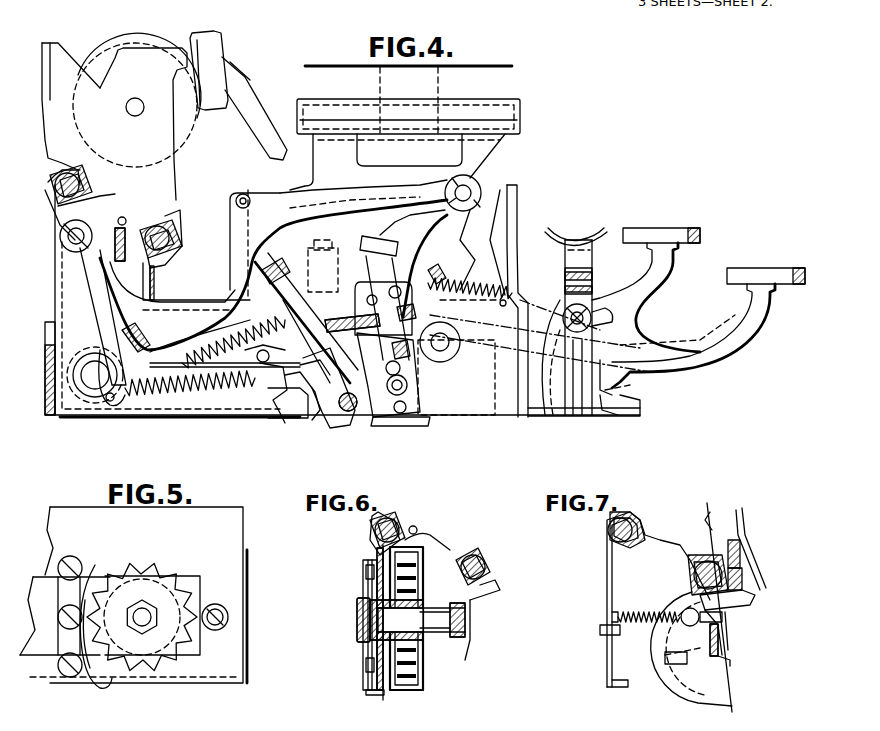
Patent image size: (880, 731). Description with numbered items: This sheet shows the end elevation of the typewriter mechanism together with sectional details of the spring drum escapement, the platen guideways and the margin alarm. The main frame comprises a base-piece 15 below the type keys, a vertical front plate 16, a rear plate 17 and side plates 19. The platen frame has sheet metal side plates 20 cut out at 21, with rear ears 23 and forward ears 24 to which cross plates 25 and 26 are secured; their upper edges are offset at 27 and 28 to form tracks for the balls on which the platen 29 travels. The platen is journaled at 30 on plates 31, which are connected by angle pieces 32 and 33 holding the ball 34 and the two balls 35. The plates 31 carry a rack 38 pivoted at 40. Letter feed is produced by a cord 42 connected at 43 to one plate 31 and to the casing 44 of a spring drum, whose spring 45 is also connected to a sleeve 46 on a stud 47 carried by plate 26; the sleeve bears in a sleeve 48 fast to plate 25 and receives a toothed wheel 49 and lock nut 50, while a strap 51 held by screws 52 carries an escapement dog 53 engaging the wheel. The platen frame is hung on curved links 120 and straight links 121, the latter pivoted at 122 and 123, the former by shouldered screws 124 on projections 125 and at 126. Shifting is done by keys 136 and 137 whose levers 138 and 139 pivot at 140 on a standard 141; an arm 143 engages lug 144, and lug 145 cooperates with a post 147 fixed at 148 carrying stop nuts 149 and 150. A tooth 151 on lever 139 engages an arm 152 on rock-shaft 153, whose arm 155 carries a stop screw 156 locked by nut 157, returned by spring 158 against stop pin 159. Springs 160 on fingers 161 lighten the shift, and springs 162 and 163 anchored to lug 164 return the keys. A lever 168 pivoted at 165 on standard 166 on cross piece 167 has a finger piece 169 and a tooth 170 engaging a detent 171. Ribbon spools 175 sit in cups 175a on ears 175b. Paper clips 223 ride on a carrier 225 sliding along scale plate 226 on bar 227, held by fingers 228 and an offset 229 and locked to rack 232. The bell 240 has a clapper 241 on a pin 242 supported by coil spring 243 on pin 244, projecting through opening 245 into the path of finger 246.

In FIG. 4, the base-piece 15 is at (182, 418).
In FIG. 4, the front plate 16 is at (518, 198).
In FIG. 4, the rear plate 17 is at (45, 368).
In FIG. 4, the side plates 19 is at (285, 410).
In FIG. 4, the side plates 20 is at (440, 237).
In FIG. 4, the cut-out 21 is at (408, 220).
In FIG. 5, the ears 23 is at (247, 592).
In FIG. 4, the ears 24 is at (156, 275).
In FIG. 5, the cross plate 25 is at (243, 530).
In FIG. 6, the cross plate 25 is at (380, 552).
In FIG. 7, the cross plate 25 is at (607, 578).
In FIG. 4, the cross plate 26 is at (168, 296).
In FIG. 6, the cross plate 26 is at (468, 640).
In FIG. 7, the cross plate 26 is at (730, 662).
In FIG. 4, the offset 27 is at (48, 195).
In FIG. 6, the offset 27 is at (370, 536).
In FIG. 4, the offset 28 is at (175, 258).
In FIG. 6, the offset 28 is at (492, 588).
In FIG. 4, the platen 29 is at (140, 44).
In FIG. 4, the platen journal 30 is at (137, 102).
In FIG. 4, the plates 31 is at (176, 175).
In FIG. 7, the plates 31 is at (712, 505).
In FIG. 4, the angle piece 32 is at (88, 196).
In FIG. 4, the angle piece 33 is at (152, 225).
In FIG. 6, the angle piece 33 is at (469, 559).
In FIG. 4, the ball 34 is at (58, 182).
In FIG. 6, the ball 34 is at (392, 520).
In FIG. 7, the ball 34 is at (622, 522).
In FIG. 4, the balls 35 is at (180, 220).
In FIG. 6, the balls 35 is at (482, 564).
In FIG. 4, the rack 38 is at (111, 244).
In FIG. 4, the pivot 40 is at (122, 217).
In FIG. 6, the cord 42 is at (422, 534).
In FIG. 6, the cord connection 43 is at (415, 526).
In FIG. 6, the casing 44 is at (395, 692).
In FIG. 6, the spring 45 is at (420, 668).
In FIG. 6, the sleeve 46 is at (428, 600).
In FIG. 6, the stud 47 is at (445, 612).
In FIG. 6, the sleeve 48 is at (363, 585).
In FIG. 5, the toothed wheel 49 is at (165, 580).
In FIG. 6, the toothed wheel 49 is at (363, 642).
In FIG. 6, the lock nut 50 is at (357, 620).
In FIG. 5, the strap 51 is at (58, 590).
In FIG. 6, the strap 51 is at (366, 693).
In FIG. 5, the screws 52 is at (78, 560).
In FIG. 6, the screws 52 is at (366, 570).
In FIG. 5, the escapement dog 53 is at (96, 680).
In FIG. 4, the arms or links 120 is at (296, 192).
In FIG. 4, the arms or links 121 is at (258, 375).
In FIG. 4, the pivot 122 is at (92, 390).
In FIG. 4, the pivot 123 is at (385, 355).
In FIG. 4, the shouldered screws 124 is at (66, 248).
In FIG. 4, the upward projections 125 is at (57, 305).
In FIG. 4, the pivot 126 is at (470, 188).
In FIG. 4, the key 136 is at (668, 232).
In FIG. 4, the key 137 is at (770, 275).
In FIG. 4, the key lever 138 is at (665, 293).
In FIG. 4, the key lever 139 is at (705, 368).
In FIG. 4, the pivot 140 is at (448, 347).
In FIG. 4, the standard 141 is at (474, 386).
In FIG. 4, the arm 143 is at (305, 415).
In FIG. 4, the lug or offset 144 is at (352, 333).
In FIG. 4, the lug or offset 145 is at (440, 332).
In FIG. 4, the post 147 is at (386, 258).
In FIG. 4, the post attachment 148 is at (400, 424).
In FIG. 4, the stop nut 149 is at (372, 248).
In FIG. 4, the stop nut 150 is at (410, 380).
In FIG. 4, the lateral offset or tooth 151 is at (292, 410).
In FIG. 4, the arm 152 is at (266, 393).
In FIG. 4, the rock-shaft 153 is at (352, 412).
In FIG. 4, the arm or post 155 is at (358, 300).
In FIG. 4, the stop screw 156 is at (266, 264).
In FIG. 4, the nut 157 is at (316, 256).
In FIG. 4, the spring 158 is at (238, 322).
In FIG. 4, the stop pin 159 is at (318, 418).
In FIG. 4, the springs 160 is at (190, 392).
In FIG. 4, the fingers 161 is at (116, 400).
In FIG. 4, the spring 162 is at (477, 286).
In FIG. 4, the spring 163 is at (470, 280).
In FIG. 4, the lug 164 is at (439, 265).
In FIG. 4, the pivot 165 is at (580, 312).
In FIG. 4, the standard 166 is at (555, 400).
In FIG. 4, the cross piece 167 is at (530, 420).
In FIG. 4, the lever 168 is at (566, 263).
In FIG. 4, the finger piece 169 is at (562, 240).
In FIG. 4, the tooth 170 is at (600, 418).
In FIG. 4, the tooth or detent 171 is at (617, 386).
In FIG. 4, the spools 175 is at (432, 88).
In FIG. 4, the cups 175a is at (340, 97).
In FIG. 4, the ears 175b is at (450, 147).
In FIG. 7, the spring clips 223 is at (742, 512).
In FIG. 7, the plate 225 is at (752, 592).
In FIG. 7, the scale plate 226 is at (735, 558).
In FIG. 7, the bar 227 is at (745, 575).
In FIG. 7, the supporting fingers 228 is at (740, 545).
In FIG. 7, the offset 229 is at (738, 608).
In FIG. 7, the rack 232 is at (765, 608).
In FIG. 7, the margin alarm or bell 240 is at (730, 690).
In FIG. 7, the clapper 241 is at (686, 610).
In FIG. 7, the clapper pin 242 is at (684, 644).
In FIG. 7, the coil spring 243 is at (635, 612).
In FIG. 7, the pin 244 is at (612, 612).
In FIG. 7, the opening 245 is at (720, 630).
In FIG. 7, the finger 246 is at (724, 618).